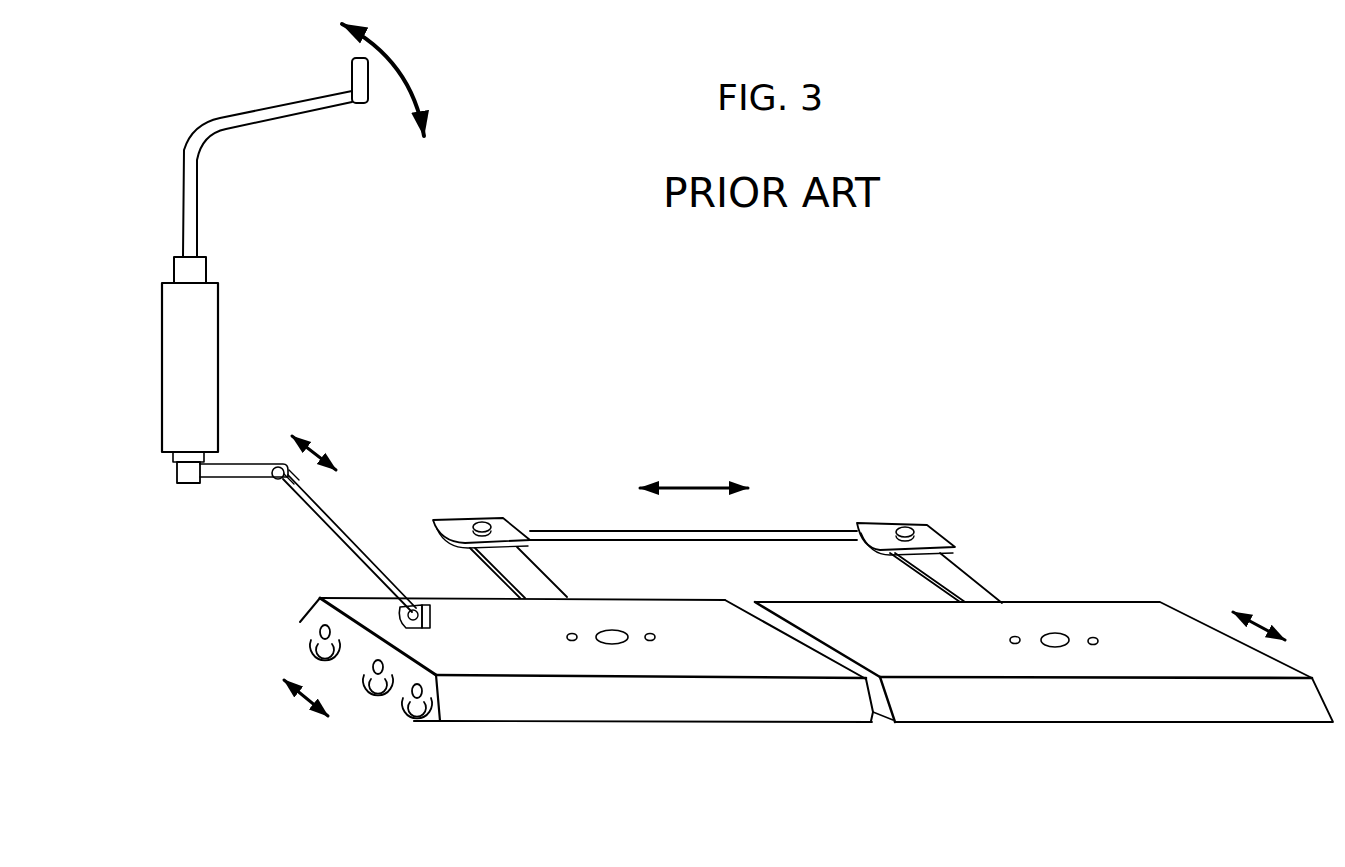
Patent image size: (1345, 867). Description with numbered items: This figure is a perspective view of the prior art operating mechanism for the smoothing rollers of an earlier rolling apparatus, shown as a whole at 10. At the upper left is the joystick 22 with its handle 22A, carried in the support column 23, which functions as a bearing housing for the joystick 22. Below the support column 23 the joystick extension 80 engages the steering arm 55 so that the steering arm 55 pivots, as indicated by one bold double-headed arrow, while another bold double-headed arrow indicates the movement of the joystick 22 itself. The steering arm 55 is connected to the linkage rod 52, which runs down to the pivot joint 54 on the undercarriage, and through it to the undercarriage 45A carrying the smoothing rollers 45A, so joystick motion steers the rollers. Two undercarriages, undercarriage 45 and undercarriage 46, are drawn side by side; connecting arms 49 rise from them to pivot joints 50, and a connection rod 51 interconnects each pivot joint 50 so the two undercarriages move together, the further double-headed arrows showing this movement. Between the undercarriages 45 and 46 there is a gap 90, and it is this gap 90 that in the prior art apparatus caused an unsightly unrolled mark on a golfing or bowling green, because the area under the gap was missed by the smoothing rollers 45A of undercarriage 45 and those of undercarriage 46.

The prior art positioning apparatus 10 is at (762, 541).
The joystick 22 is at (224, 128).
The handle 22A is at (353, 68).
The support column 23 is at (198, 342).
The joystick extension 80 is at (185, 470).
The steering arm 55 is at (240, 472).
The linkage rod 52 is at (338, 535).
The pivot joint 54 is at (415, 603).
The undercarriage 45 is at (582, 697).
The smoothing rollers 45A is at (310, 643).
The undercarriage 46 is at (1050, 702).
The gap 90 is at (885, 722).
The connecting arms 49 is at (540, 575).
The pivot joints 50 is at (932, 537).
The connection rod 51 is at (785, 534).